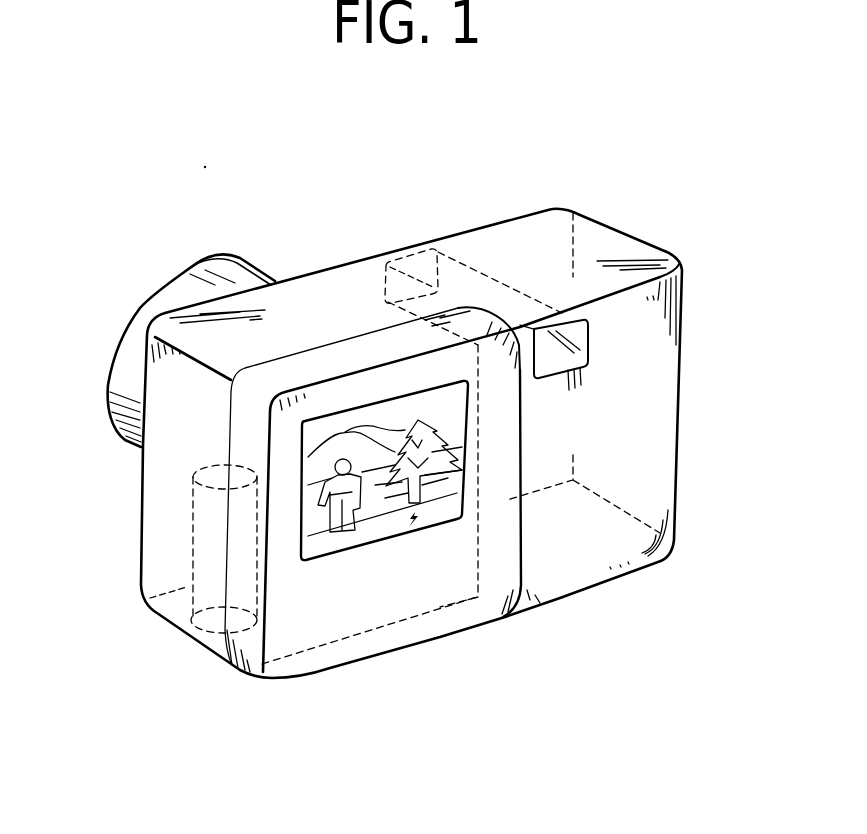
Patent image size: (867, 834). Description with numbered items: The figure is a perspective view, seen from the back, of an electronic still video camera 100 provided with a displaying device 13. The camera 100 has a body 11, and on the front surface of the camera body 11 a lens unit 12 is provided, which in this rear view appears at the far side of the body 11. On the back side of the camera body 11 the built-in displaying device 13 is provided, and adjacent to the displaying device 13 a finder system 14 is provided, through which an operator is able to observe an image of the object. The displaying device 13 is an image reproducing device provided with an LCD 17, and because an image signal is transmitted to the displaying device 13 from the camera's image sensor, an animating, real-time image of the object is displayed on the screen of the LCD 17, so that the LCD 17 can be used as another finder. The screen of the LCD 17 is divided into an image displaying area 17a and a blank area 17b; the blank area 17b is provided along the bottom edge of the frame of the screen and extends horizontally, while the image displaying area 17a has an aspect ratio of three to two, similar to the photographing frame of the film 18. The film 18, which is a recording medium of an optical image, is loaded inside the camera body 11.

The electronic still video camera 100 is at (658, 210).
The camera body 11 is at (679, 437).
The lens unit 12 is at (197, 283).
The displaying device 13 is at (503, 617).
The finder system 14 is at (492, 278).
The LCD 17 is at (305, 456).
The image displaying area 17a is at (463, 452).
The blank area 17b is at (463, 506).
The film 18 is at (192, 556).